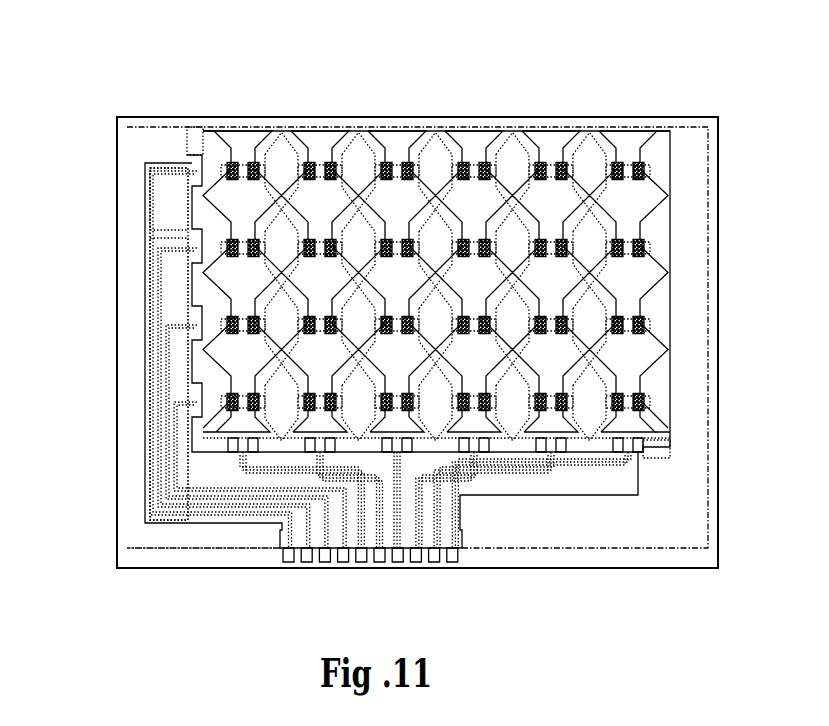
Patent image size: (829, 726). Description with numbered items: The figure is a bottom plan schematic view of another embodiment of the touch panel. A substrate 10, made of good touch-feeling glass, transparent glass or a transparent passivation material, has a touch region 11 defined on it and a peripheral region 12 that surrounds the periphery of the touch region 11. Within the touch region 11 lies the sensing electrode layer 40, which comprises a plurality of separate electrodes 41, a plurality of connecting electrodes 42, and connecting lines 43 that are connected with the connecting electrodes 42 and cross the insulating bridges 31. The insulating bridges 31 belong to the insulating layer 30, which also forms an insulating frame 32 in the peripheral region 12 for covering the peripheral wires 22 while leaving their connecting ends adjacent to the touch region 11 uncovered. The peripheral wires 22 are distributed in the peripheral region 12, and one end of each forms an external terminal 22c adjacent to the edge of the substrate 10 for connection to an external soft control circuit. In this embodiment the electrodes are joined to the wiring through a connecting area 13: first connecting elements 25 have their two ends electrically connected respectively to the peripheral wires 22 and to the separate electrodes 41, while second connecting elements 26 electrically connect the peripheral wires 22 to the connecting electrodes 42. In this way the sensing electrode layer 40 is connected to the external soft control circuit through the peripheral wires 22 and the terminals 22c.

The substrate 10 is at (162, 566).
The touch region 11 is at (485, 247).
The peripheral region 12 is at (712, 192).
The connecting area 13 is at (670, 446).
The peripheral wire 22 is at (146, 205).
The external terminal 22c is at (310, 563).
The first connecting element 25 is at (190, 130).
The second connecting element 26 is at (645, 461).
The insulating layer 30 is at (56, 228).
The insulating bridge 31 is at (148, 289).
The insulating frame 32 is at (146, 222).
The sensing electrode layer 40 is at (435, 242).
The separate electrode 41 is at (588, 146).
The connecting electrode 42 is at (550, 160).
The connecting line 43 is at (524, 138).